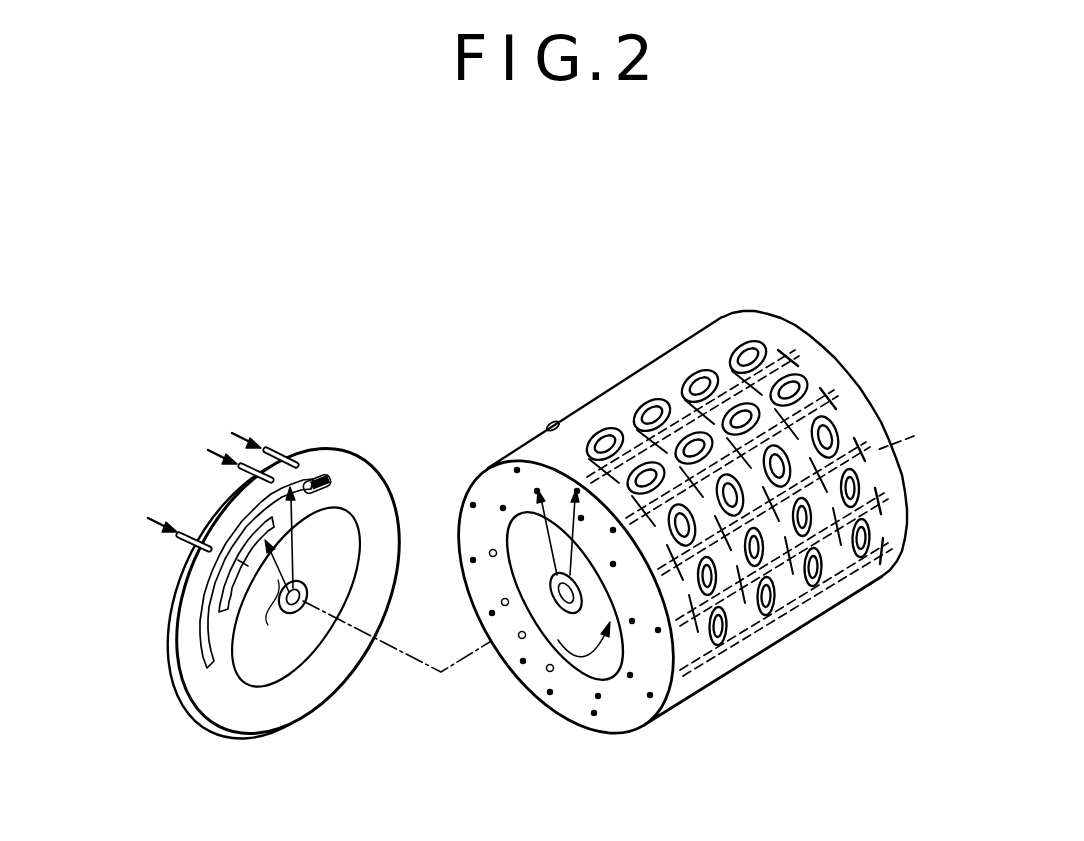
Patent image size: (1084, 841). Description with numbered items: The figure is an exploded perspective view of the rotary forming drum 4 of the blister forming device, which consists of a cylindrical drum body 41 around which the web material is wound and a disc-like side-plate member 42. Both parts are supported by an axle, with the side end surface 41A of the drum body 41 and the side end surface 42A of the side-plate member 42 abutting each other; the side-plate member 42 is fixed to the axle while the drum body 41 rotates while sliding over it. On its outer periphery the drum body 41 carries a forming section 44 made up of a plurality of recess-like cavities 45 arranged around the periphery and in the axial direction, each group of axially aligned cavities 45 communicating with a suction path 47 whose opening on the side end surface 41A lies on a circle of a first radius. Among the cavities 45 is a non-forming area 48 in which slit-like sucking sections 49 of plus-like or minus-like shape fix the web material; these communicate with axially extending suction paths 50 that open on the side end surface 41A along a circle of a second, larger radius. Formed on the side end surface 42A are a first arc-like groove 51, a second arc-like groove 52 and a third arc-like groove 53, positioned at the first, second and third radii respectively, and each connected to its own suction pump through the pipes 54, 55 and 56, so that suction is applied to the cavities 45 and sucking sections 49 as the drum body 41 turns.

The rotary forming drum 4 is at (380, 402).
The drum body 41 is at (682, 541).
The side end surface 41A is at (525, 679).
The side-plate member 42 is at (284, 591).
The side end surface 42A is at (287, 712).
The forming section 44 is at (657, 398).
The cavities 45 is at (607, 432).
The suction paths 47 is at (597, 698).
The non-forming area 48 is at (815, 390).
The sucking sections 49 is at (818, 434).
The suction paths 50 is at (577, 496).
The first arc-like groove 51 is at (325, 478).
The second arc-like groove 52 is at (229, 622).
The third arc-like groove 53 is at (238, 590).
The pipe 54 is at (278, 452).
The pipe 55 is at (185, 545).
The pipe 56 is at (243, 472).